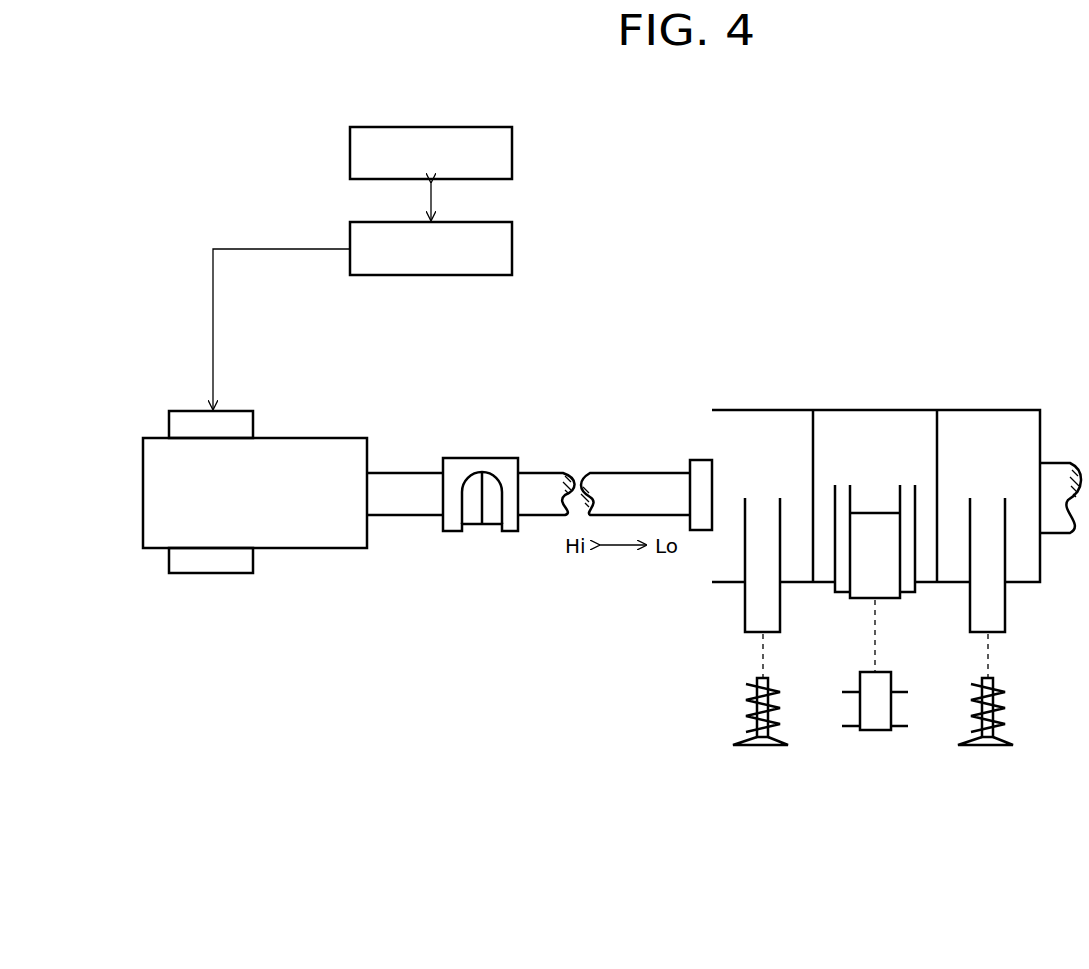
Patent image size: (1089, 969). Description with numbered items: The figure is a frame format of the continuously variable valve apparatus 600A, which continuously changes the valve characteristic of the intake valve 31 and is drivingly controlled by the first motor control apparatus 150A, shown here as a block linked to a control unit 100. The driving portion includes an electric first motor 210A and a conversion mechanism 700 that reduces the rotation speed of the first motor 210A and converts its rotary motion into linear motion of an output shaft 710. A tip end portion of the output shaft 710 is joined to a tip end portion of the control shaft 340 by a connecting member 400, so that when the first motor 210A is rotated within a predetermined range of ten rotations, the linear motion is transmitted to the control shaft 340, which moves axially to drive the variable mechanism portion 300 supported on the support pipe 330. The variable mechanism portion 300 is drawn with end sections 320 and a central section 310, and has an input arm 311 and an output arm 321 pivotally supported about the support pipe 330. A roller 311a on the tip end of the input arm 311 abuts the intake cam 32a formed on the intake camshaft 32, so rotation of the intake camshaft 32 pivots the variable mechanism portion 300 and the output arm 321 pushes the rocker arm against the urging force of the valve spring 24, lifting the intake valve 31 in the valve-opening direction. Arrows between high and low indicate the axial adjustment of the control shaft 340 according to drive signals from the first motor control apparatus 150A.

The controller 100 is at (388, 127).
The first motor control apparatus 150A is at (388, 222).
The first motor 210A is at (245, 411).
The conversion mechanism 700 is at (330, 438).
The output shaft 710 is at (403, 473).
The connecting member 400 is at (488, 458).
The control shaft 340 is at (620, 473).
The support pipe 330 is at (690, 460).
The variable mechanism portion 300 is at (876, 452).
The sliding portion 310 is at (862, 410).
The gear portion 320 is at (760, 410).
The output arm 321 is at (745, 614).
The input arm 311 is at (837, 595).
The roller 311a is at (862, 602).
The intake camshaft 32 is at (846, 732).
The intake cam 32a is at (893, 680).
The valve spring 24 is at (770, 682).
The intake valve 31 is at (745, 741).
The continuously variable valve apparatus 600A is at (712, 220).